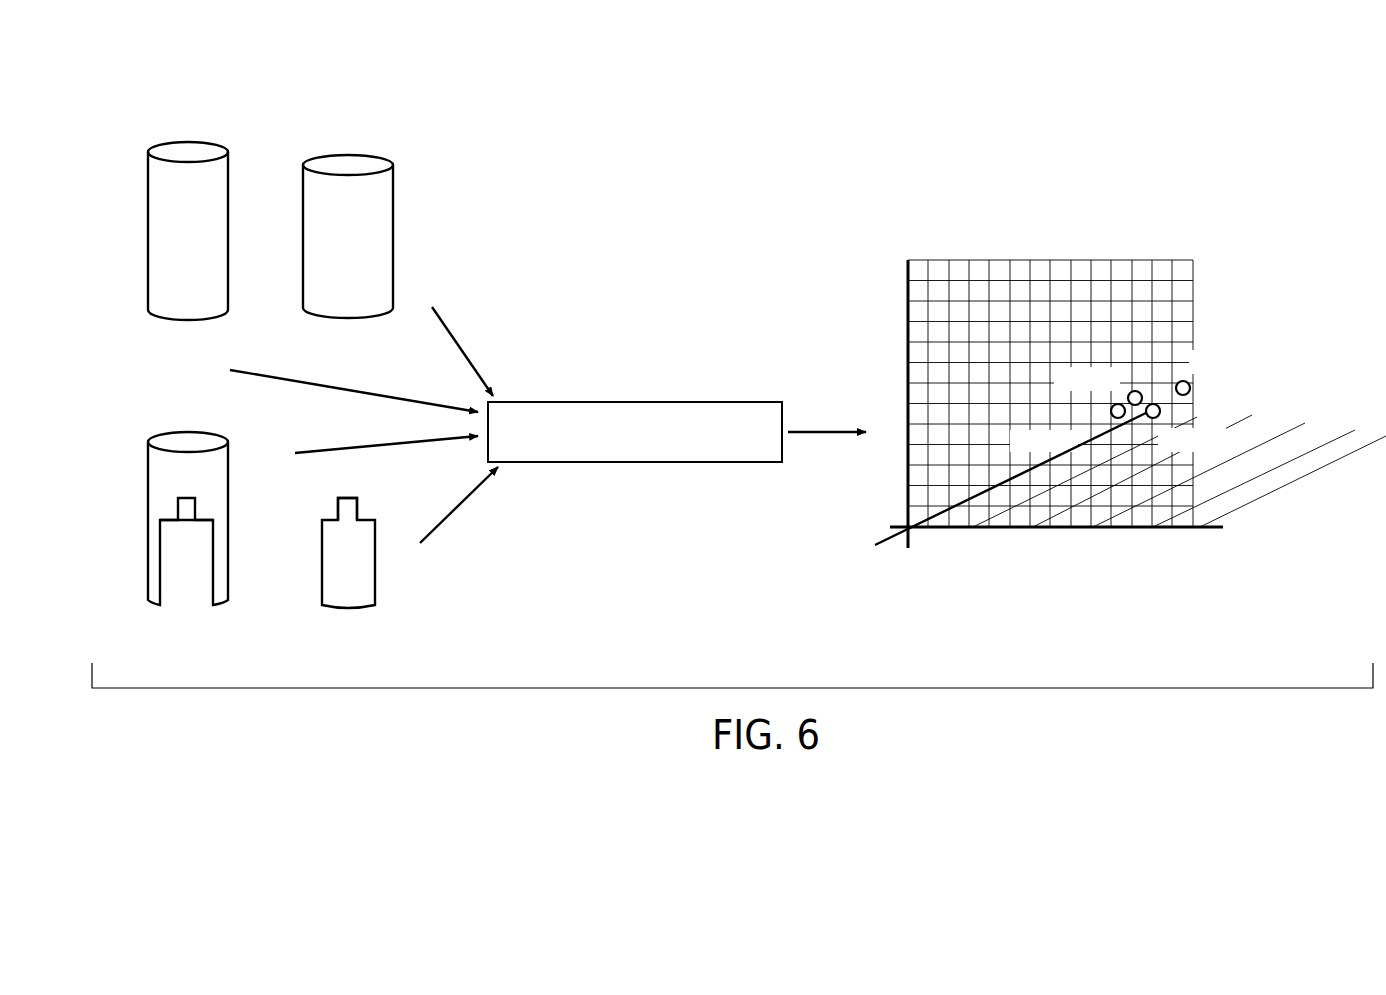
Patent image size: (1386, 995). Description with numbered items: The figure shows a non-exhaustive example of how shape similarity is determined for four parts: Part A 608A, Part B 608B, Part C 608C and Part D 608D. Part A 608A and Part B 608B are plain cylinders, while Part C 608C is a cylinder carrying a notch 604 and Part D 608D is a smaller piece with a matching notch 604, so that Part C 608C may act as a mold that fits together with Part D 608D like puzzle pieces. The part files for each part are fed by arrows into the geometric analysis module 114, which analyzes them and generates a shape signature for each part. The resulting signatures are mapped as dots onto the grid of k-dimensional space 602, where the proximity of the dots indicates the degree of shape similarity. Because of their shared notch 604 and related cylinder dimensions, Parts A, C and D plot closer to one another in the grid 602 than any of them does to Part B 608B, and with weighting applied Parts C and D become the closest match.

The Part A 608A is at (187, 140).
The Part B 608B is at (394, 205).
The Part C 608C is at (170, 441).
The Part D 608D is at (376, 589).
The notch 604 is at (188, 498).
The geometric analysis module 114 is at (636, 400).
The grid of k-dimensional space 602 is at (1160, 258).